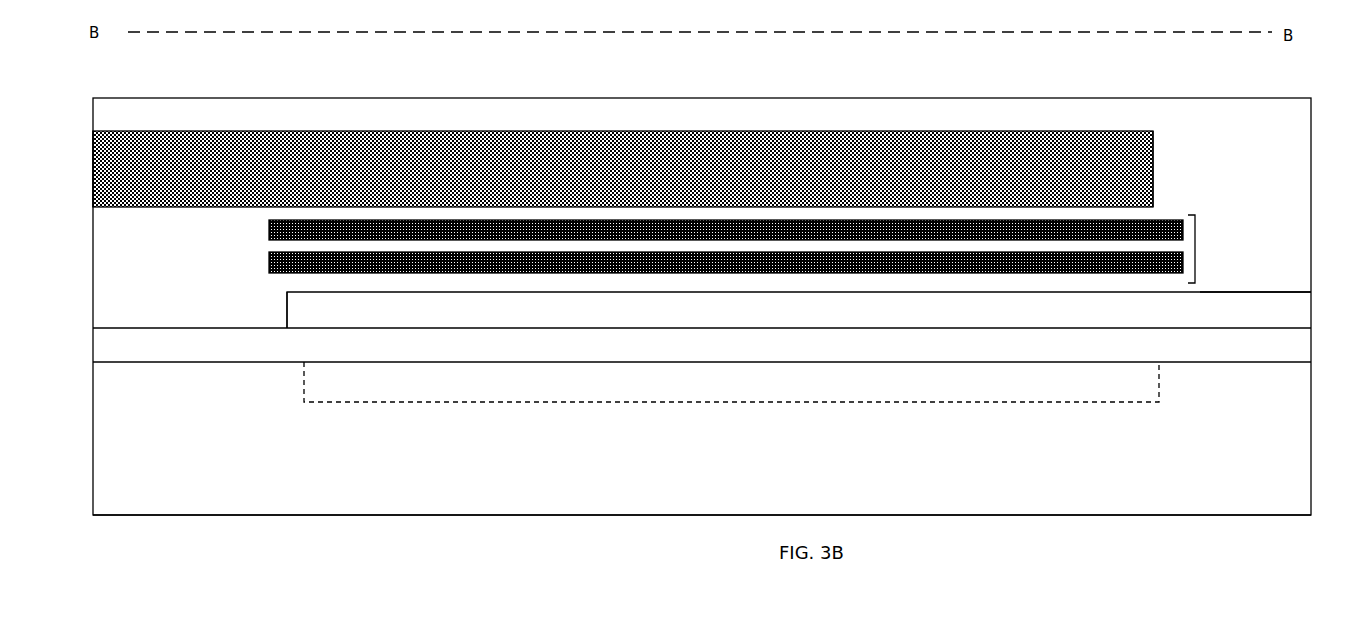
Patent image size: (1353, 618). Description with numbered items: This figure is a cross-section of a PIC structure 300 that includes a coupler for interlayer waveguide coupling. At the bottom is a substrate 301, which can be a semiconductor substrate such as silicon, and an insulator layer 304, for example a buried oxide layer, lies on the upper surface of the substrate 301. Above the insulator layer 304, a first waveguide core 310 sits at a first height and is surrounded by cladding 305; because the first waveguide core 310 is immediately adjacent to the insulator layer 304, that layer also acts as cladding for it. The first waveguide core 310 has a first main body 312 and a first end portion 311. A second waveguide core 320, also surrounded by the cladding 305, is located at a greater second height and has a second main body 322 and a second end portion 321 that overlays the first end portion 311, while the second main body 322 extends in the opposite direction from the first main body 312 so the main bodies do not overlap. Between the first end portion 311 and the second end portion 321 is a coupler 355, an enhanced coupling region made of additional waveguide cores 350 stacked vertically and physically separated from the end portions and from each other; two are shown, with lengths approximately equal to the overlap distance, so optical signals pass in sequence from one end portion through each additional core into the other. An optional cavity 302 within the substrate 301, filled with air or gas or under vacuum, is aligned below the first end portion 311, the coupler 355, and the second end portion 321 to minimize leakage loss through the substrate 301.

The PIC structure 300 is at (887, 89).
The substrate 301 is at (702, 492).
The cavity 302 is at (840, 402).
The insulator layer 304 is at (1311, 345).
The cladding 305 is at (1311, 214).
The first waveguide core 310 is at (287, 309).
The first end portion 311 is at (799, 310).
The first main body 312 is at (1255, 306).
The second waveguide core 320 is at (1153, 168).
The second end portion 321 is at (623, 169).
The second main body 322 is at (139, 169).
The additional waveguide cores 350 is at (268, 232).
The coupler 355 is at (1197, 249).